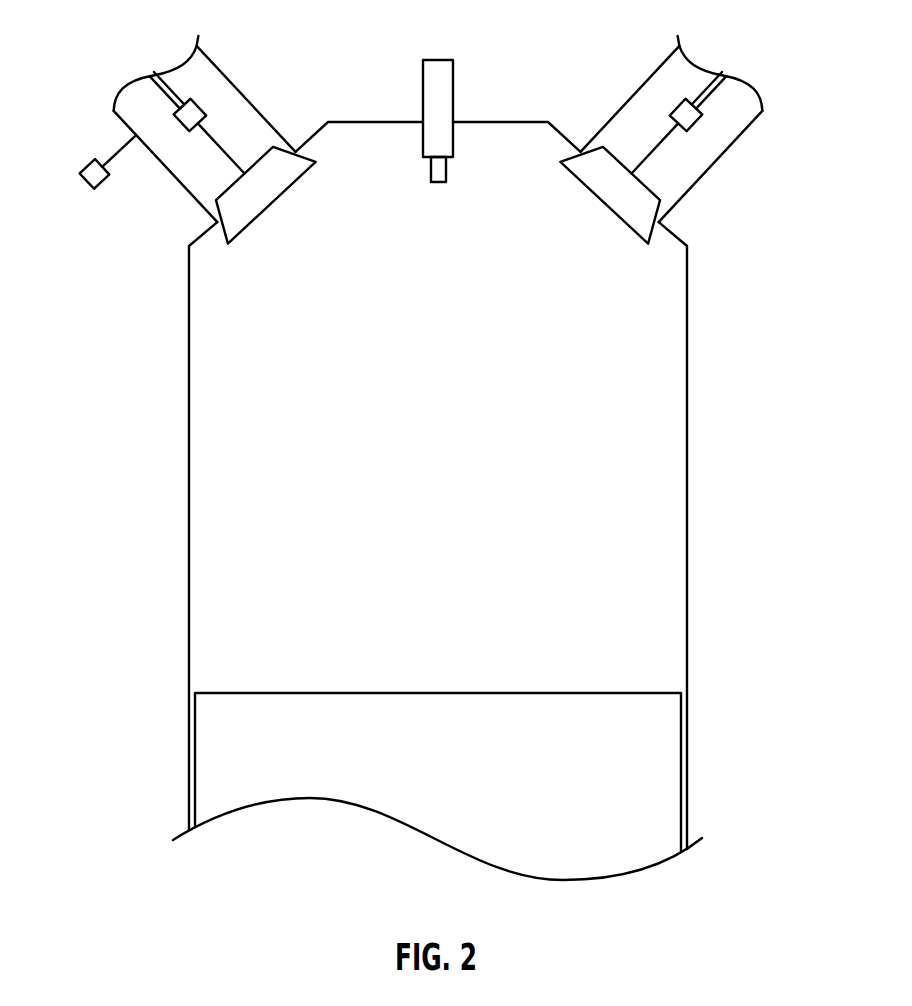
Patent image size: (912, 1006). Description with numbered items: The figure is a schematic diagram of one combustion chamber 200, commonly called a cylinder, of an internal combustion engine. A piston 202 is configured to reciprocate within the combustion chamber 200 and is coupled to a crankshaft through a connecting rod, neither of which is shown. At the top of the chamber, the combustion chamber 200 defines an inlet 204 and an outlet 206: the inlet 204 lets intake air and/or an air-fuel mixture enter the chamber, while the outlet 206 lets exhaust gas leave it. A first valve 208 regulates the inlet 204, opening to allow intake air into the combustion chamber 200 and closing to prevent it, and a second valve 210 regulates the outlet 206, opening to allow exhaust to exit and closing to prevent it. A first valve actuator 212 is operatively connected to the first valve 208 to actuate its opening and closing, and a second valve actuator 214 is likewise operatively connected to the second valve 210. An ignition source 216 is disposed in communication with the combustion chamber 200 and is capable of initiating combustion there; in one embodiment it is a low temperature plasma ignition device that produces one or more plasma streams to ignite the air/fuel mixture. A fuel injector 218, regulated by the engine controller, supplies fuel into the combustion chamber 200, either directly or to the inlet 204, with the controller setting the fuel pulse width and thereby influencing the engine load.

The combustion chamber 200 is at (657, 389).
The piston 202 is at (590, 693).
The inlet 204 is at (237, 104).
The outlet 206 is at (702, 154).
The first valve 208 is at (273, 203).
The second valve 210 is at (603, 203).
The first valve actuator 212 is at (152, 79).
The second valve actuator 214 is at (724, 79).
The ignition source 216 is at (439, 60).
The fuel injector 218 is at (83, 163).